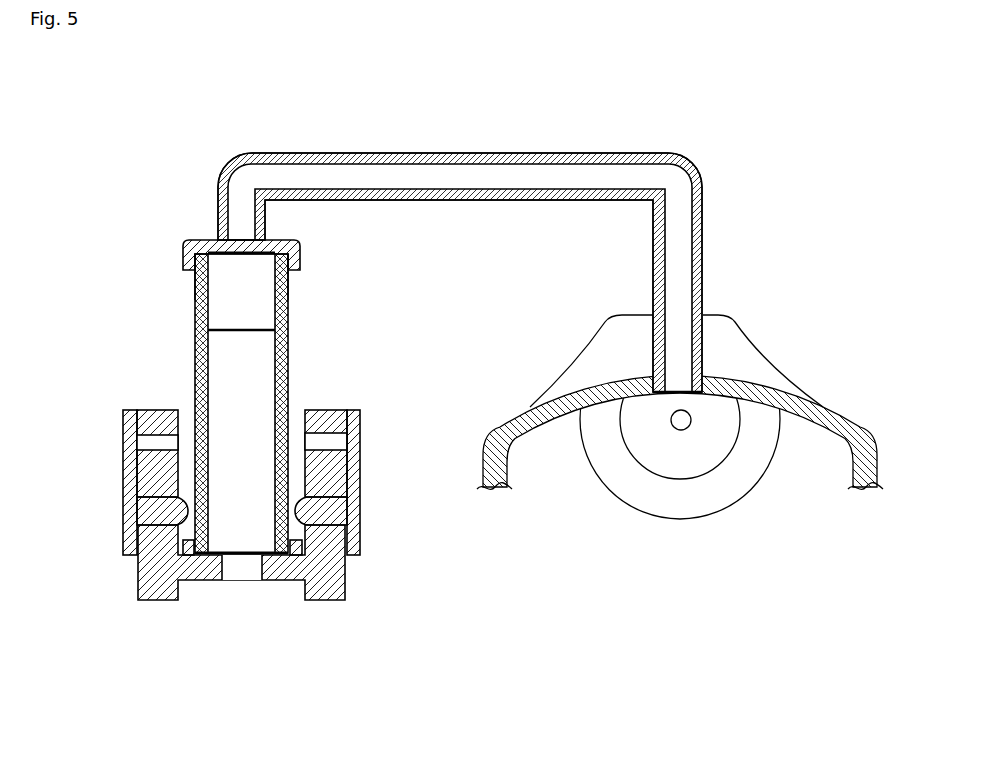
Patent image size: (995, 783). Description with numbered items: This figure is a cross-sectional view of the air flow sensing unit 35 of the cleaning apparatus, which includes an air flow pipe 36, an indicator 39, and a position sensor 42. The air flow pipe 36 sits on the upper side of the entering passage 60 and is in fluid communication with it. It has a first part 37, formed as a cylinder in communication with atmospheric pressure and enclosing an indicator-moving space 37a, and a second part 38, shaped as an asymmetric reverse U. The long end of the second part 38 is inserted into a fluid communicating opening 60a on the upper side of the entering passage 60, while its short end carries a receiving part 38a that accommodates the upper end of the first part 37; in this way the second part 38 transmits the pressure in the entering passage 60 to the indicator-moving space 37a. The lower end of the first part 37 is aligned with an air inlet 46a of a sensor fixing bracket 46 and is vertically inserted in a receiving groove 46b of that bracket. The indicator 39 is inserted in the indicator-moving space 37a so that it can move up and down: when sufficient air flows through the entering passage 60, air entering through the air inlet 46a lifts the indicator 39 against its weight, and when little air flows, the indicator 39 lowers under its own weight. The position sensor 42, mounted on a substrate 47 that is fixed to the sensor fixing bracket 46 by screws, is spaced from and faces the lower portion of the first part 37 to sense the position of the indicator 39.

The air flow sensing unit 35 is at (383, 85).
The air flow pipe 36 is at (190, 403).
The first part 37 is at (203, 347).
The indicator-moving space 37a is at (210, 305).
The second part 38 is at (233, 161).
The receiving part 38a is at (193, 239).
The indicator 39 is at (240, 392).
The position sensor 42 is at (150, 512).
The sensor fixing bracket 46 is at (203, 594).
The air inlet 46a is at (233, 572).
The receiving groove 46b is at (192, 534).
The substrate 47 is at (133, 457).
The entering passage 60 is at (680, 408).
The fluid communicating opening 60a is at (697, 397).